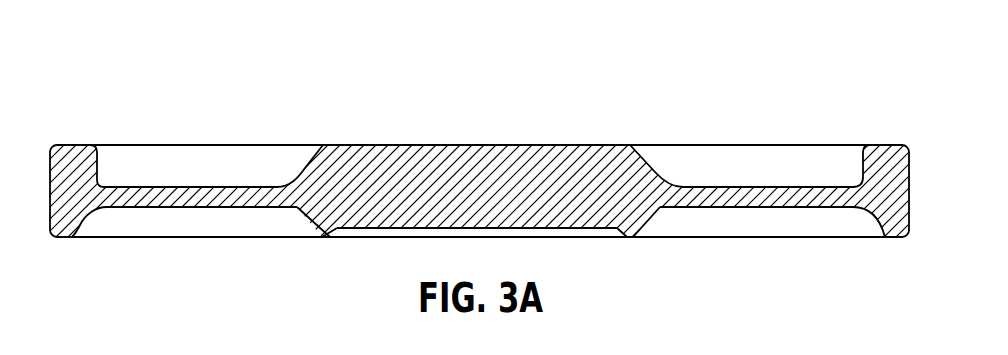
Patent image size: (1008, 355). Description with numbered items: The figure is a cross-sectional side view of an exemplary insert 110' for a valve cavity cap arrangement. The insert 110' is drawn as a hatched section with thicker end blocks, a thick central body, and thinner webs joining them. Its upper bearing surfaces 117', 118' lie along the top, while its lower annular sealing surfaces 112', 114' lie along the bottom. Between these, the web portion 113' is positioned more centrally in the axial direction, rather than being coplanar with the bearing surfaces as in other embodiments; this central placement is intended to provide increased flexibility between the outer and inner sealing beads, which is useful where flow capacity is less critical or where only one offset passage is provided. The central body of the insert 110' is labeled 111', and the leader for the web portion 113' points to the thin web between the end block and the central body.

The insert 110' is at (504, 124).
The central body portion 111' is at (551, 133).
The lower annular sealing surface 112' is at (478, 275).
The web portion 113' is at (478, 255).
The lower annular sealing surface 114' is at (449, 270).
The upper bearing surface 117' is at (480, 118).
The upper bearing surface 118' is at (462, 128).